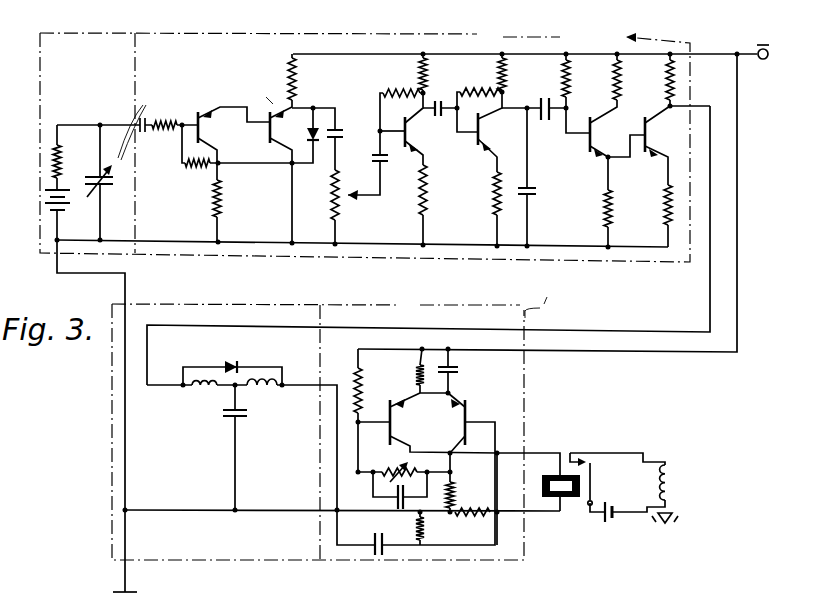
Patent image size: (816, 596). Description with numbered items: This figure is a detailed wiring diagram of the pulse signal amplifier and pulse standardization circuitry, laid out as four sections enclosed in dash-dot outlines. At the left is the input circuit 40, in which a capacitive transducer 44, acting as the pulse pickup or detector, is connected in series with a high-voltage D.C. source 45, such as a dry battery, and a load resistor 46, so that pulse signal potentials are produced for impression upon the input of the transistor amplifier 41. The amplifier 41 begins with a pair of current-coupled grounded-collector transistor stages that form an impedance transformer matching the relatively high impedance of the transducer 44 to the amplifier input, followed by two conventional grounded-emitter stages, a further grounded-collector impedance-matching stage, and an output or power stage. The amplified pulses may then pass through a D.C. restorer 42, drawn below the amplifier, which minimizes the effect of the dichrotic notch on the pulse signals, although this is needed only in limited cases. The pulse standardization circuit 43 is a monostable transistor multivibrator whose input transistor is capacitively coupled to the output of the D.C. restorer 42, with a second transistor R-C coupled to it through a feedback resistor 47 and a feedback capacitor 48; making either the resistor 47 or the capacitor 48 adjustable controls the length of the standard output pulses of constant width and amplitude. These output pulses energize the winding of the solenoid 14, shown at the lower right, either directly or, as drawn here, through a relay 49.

The input circuit 40 is at (121, 21).
The transistor amplifier 41 is at (488, 35).
The D.C. restorer 42 is at (233, 303).
The pulse standardization circuit 43 is at (399, 307).
The capacitive transducer 44 is at (104, 198).
The high-voltage D.C. source 45 is at (65, 204).
The load resistor 46 is at (61, 170).
The feedback resistor 47 is at (398, 463).
The feedback capacitor 48 is at (397, 498).
The relay 49 is at (568, 498).
The solenoid 14 is at (670, 484).